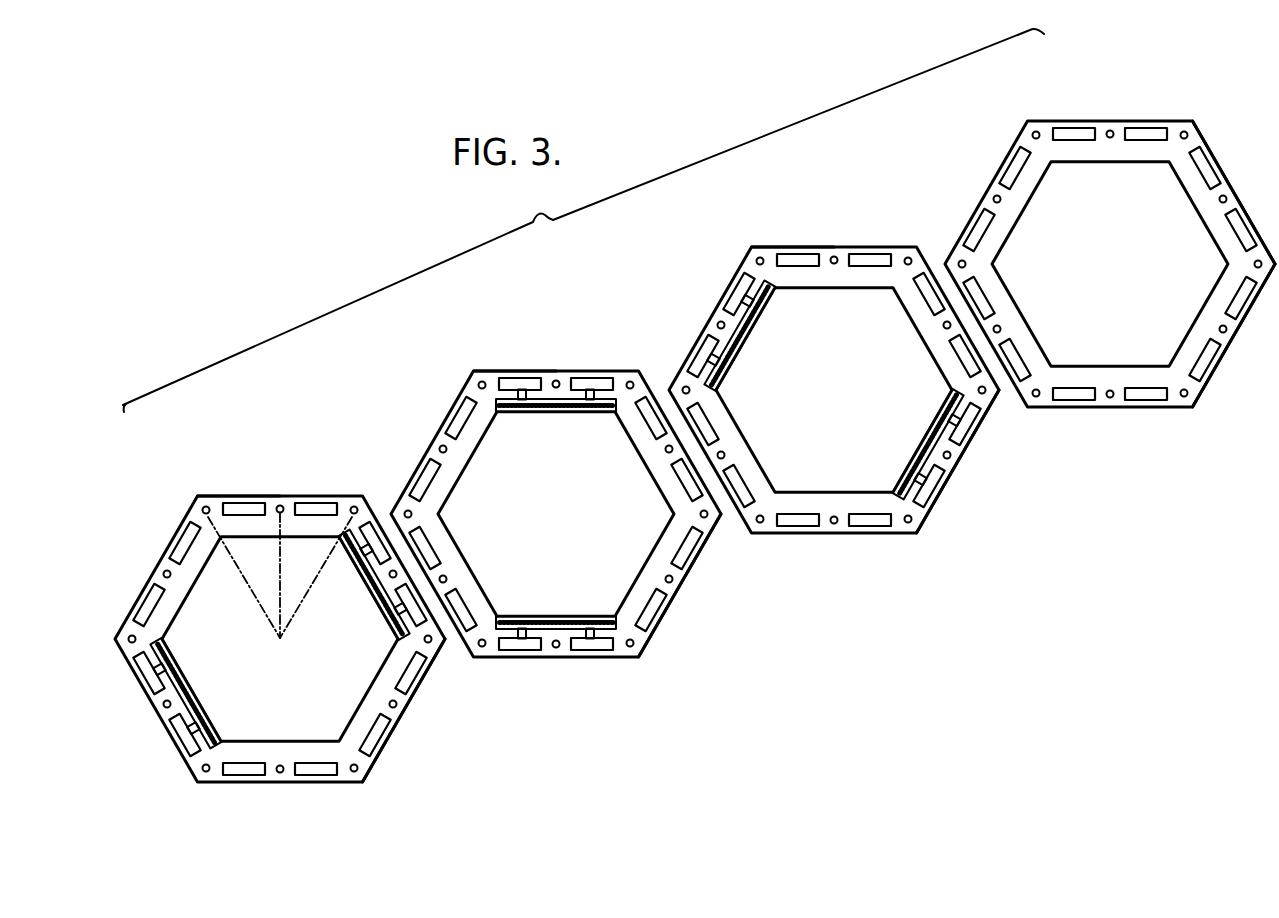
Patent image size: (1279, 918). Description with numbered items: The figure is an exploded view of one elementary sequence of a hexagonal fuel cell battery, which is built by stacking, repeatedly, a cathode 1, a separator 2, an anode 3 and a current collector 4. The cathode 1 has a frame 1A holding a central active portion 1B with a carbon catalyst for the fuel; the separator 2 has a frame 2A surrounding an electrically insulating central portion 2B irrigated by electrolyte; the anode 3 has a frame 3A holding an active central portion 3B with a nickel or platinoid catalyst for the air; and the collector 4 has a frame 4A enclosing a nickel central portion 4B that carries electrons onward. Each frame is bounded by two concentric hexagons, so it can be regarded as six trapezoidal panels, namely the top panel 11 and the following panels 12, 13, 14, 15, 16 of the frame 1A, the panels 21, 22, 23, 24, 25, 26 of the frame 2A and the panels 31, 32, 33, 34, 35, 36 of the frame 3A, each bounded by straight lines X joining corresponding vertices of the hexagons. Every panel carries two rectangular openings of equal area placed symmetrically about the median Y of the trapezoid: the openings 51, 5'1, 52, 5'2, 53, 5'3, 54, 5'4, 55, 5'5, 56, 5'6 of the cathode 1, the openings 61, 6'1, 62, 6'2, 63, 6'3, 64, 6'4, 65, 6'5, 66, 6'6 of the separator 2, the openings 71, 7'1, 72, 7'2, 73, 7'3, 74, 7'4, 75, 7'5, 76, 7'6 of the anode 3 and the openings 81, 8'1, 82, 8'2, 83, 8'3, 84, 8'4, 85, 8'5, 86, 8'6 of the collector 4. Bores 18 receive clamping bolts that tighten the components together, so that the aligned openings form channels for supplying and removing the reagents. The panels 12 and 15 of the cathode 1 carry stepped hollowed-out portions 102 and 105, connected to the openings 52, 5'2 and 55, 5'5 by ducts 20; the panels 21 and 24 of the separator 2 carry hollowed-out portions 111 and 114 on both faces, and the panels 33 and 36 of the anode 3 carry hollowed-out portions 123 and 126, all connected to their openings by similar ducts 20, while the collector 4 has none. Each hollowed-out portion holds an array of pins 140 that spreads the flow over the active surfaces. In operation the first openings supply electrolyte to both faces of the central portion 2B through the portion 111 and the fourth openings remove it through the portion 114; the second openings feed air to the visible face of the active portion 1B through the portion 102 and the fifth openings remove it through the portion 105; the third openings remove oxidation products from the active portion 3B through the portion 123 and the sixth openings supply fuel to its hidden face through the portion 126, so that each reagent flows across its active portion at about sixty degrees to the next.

The cathode 1 is at (139, 568).
The frame 1A is at (216, 491).
The central active portion 1B is at (333, 703).
The panel 11 is at (280, 504).
The panel 12 is at (378, 590).
The panel 13 is at (388, 702).
The panel 14 is at (281, 764).
The panel 15 is at (173, 700).
The panel 16 is at (175, 577).
The bores 18 is at (204, 505).
The ducts 20 is at (431, 645).
The opening 51 is at (258, 503).
The opening 5'1 is at (316, 489).
The opening 52 is at (346, 533).
The opening 5'2 is at (386, 615).
The opening 53 is at (423, 684).
The opening 5'3 is at (389, 740).
The opening 54 is at (318, 763).
The opening 5'4 is at (245, 742).
The opening 55 is at (198, 725).
The opening 5'5 is at (173, 669).
The opening 56 is at (143, 608).
The opening 5'6 is at (166, 541).
The hollowed-out portion 102 is at (406, 641).
The hollowed-out portion 105 is at (175, 645).
The pins 140 is at (177, 683).
The straight lines X is at (280, 577).
The median Y is at (288, 575).
The separator 2 is at (423, 433).
The frame 2A is at (488, 366).
The central portion 2B is at (615, 578).
The panel 21 is at (558, 378).
The panel 22 is at (666, 453).
The panel 23 is at (675, 582).
The panel 24 is at (556, 650).
The panel 25 is at (447, 575).
The panel 26 is at (450, 452).
The opening 61 is at (518, 378).
The opening 6'1 is at (598, 350).
The opening 62 is at (645, 425).
The opening 6'2 is at (660, 487).
The opening 63 is at (700, 552).
The opening 6'3 is at (673, 622).
The opening 64 is at (600, 650).
The opening 6'4 is at (520, 673).
The opening 65 is at (470, 605).
The opening 6'5 is at (448, 538).
The opening 66 is at (422, 475).
The opening 6'6 is at (441, 401).
The hollowed-out portion 111 is at (560, 413).
The hollowed-out portion 114 is at (558, 614).
The anode 3 is at (701, 315).
The frame 3A is at (765, 243).
The active central portion 3B is at (872, 474).
The panel 31 is at (835, 254).
The panel 32 is at (945, 330).
The panel 33 is at (958, 465).
The panel 34 is at (834, 527).
The panel 35 is at (724, 450).
The panel 36 is at (730, 362).
The opening 71 is at (800, 254).
The opening 7'1 is at (875, 229).
The opening 72 is at (925, 298).
The opening 7'2 is at (938, 358).
The opening 73 is at (978, 432).
The opening 7'3 is at (952, 495).
The opening 74 is at (878, 527).
The opening 7'4 is at (798, 556).
The opening 75 is at (745, 482).
The opening 7'5 is at (731, 418).
The opening 76 is at (698, 350).
The opening 7'6 is at (721, 274).
The hollowed-out portion 123 is at (918, 448).
The hollowed-out portion 126 is at (748, 338).
The current collector 4 is at (972, 195).
The frame 4A is at (1236, 180).
The central portion 4B is at (1178, 313).
The opening 81 is at (1078, 141).
The opening 8'1 is at (1146, 169).
The opening 82 is at (1203, 176).
The opening 8'2 is at (1216, 240).
The opening 83 is at (1241, 300).
The opening 8'3 is at (1183, 352).
The opening 84 is at (1150, 401).
The opening 8'4 is at (1077, 422).
The opening 85 is at (1018, 359).
The opening 8'5 is at (1008, 292).
The opening 86 is at (975, 224).
The opening 8'6 is at (996, 156).